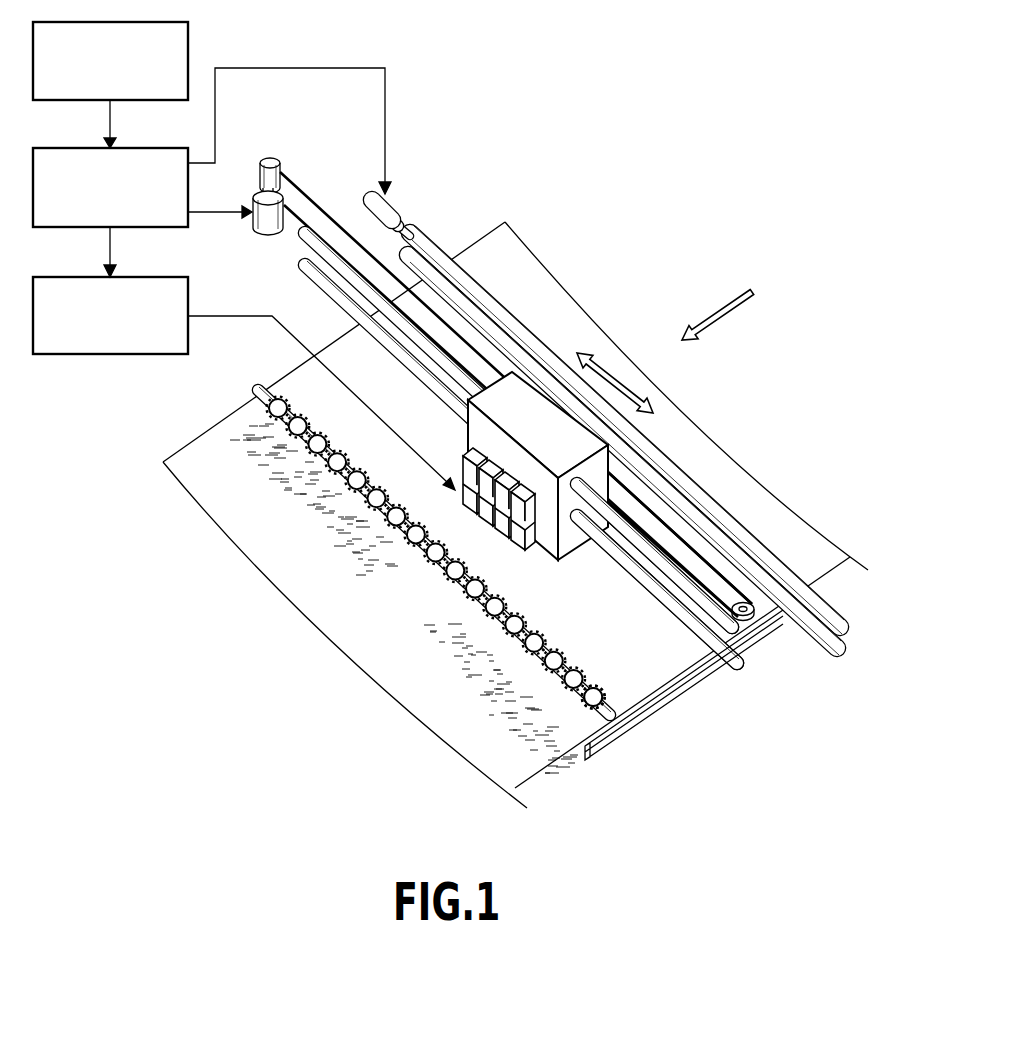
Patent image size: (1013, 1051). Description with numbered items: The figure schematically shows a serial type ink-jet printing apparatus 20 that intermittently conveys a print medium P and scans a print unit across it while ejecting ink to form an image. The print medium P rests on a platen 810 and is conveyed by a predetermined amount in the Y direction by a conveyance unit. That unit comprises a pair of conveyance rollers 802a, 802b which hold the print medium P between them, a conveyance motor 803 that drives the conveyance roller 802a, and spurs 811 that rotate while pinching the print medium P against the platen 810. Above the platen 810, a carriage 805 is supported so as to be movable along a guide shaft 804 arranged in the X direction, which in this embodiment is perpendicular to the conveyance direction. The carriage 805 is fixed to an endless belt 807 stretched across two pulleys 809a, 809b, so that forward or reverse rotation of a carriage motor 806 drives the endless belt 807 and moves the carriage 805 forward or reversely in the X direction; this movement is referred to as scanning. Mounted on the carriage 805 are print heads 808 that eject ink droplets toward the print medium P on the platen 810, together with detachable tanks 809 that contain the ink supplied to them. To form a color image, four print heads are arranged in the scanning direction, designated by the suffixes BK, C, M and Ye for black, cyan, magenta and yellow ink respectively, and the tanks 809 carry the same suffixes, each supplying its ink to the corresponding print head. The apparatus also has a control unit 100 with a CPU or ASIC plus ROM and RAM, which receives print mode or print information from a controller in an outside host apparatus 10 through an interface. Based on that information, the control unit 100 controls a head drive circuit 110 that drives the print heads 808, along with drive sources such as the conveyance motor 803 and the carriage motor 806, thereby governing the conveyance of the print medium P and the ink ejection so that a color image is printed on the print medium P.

The host apparatus 10 is at (146, 22).
The control unit 100 is at (146, 148).
The head drive circuit 110 is at (146, 277).
The ink-jet printing apparatus 20 is at (694, 156).
The conveyance roller 802a is at (812, 603).
The conveyance roller 802b is at (822, 642).
The conveyance motor 803 is at (392, 207).
The guide shaft 804 is at (730, 658).
The carriage 805 is at (522, 378).
The carriage motor 806 is at (256, 207).
The endless belt 807 is at (300, 188).
The print heads 808 is at (440, 643).
The tanks 809 is at (582, 448).
The pulley 809a is at (272, 160).
The pulley 809b is at (747, 615).
The platen 810 is at (637, 727).
The spurs 811 is at (580, 707).
The print medium P is at (518, 256).
The black BK is at (472, 448).
The cyan C is at (488, 461).
The magenta M is at (505, 472).
The yellow Ye is at (521, 484).
The X direction X is at (615, 383).
The Y direction Y is at (718, 308).